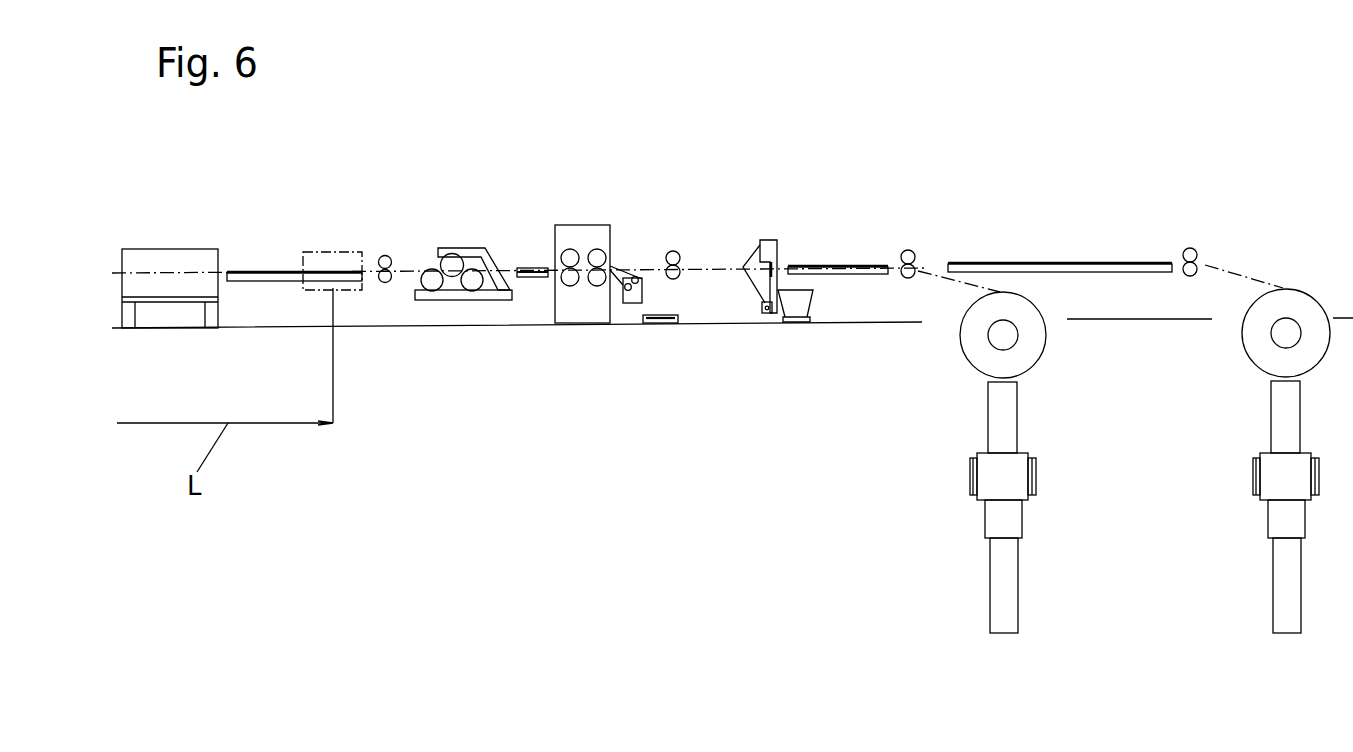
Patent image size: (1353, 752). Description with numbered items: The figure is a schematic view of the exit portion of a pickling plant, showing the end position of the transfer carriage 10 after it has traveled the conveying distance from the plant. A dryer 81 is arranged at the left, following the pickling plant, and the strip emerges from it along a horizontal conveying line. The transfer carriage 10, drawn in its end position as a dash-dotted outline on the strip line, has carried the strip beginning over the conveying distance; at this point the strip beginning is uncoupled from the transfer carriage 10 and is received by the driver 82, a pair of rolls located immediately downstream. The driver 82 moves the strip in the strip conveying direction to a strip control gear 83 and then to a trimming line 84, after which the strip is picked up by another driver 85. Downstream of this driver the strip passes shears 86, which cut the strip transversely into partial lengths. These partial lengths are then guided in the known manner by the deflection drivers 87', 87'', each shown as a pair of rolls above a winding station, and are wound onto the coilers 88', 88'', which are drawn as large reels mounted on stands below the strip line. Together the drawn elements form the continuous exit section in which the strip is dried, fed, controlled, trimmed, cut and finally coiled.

The dryer 81 is at (183, 265).
The transfer carriage 10 is at (334, 262).
The driver 82 is at (396, 257).
The strip control gear 83 is at (492, 253).
The trimming line 84 is at (598, 233).
The driver 85 is at (678, 252).
The shears 86 is at (777, 242).
The deflection driver 87' is at (938, 227).
The deflection driver 87'' is at (1226, 224).
The coiler 88' is at (975, 462).
The coiler 88'' is at (1263, 461).